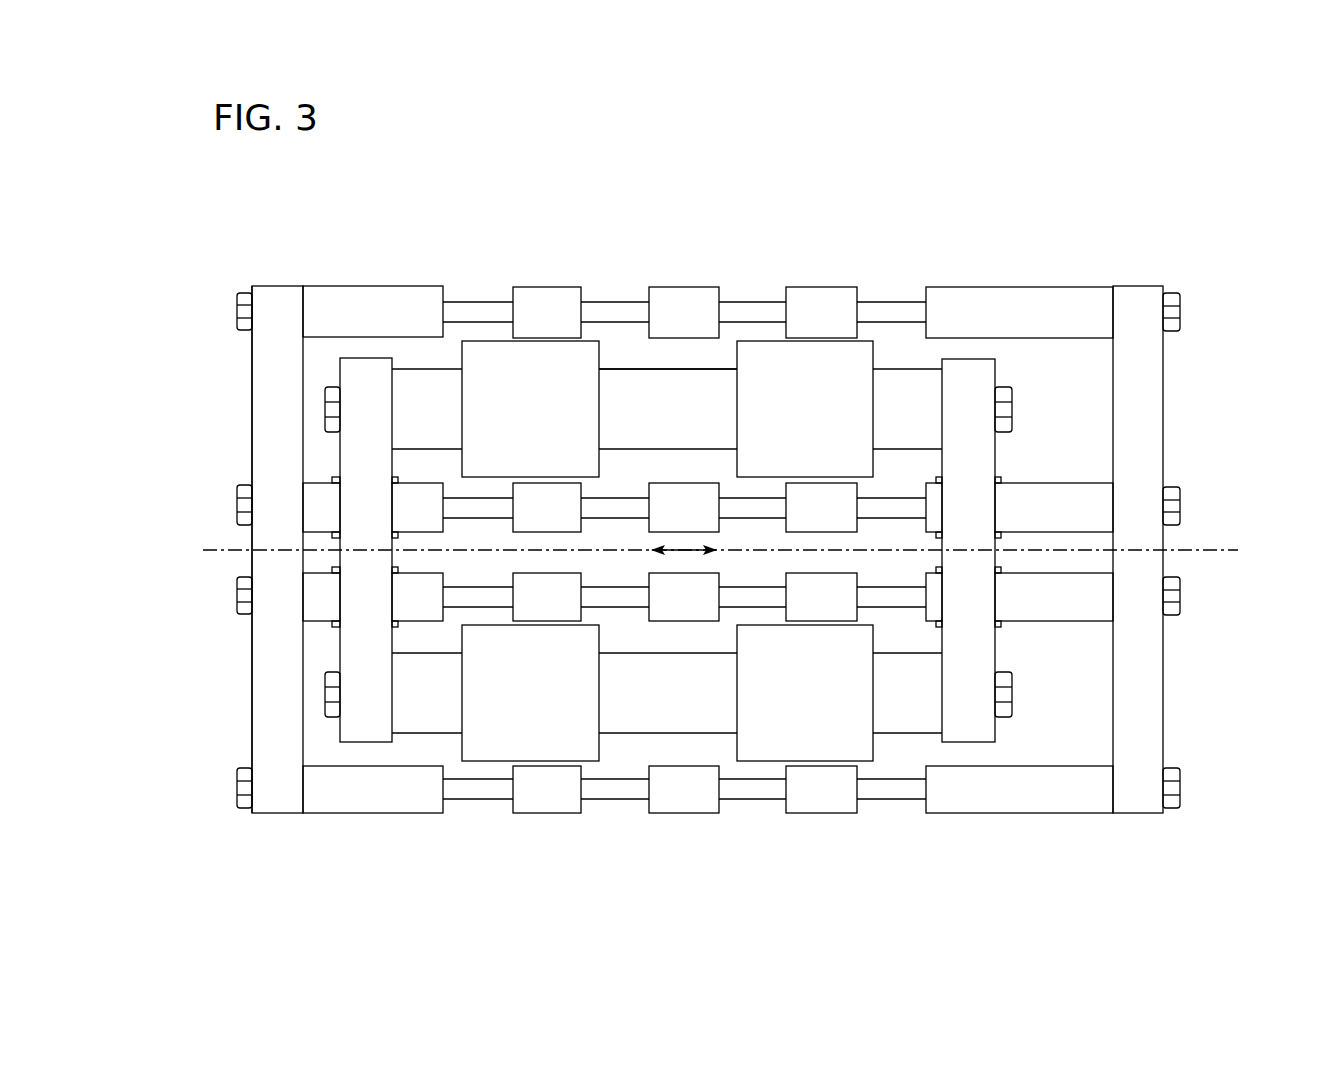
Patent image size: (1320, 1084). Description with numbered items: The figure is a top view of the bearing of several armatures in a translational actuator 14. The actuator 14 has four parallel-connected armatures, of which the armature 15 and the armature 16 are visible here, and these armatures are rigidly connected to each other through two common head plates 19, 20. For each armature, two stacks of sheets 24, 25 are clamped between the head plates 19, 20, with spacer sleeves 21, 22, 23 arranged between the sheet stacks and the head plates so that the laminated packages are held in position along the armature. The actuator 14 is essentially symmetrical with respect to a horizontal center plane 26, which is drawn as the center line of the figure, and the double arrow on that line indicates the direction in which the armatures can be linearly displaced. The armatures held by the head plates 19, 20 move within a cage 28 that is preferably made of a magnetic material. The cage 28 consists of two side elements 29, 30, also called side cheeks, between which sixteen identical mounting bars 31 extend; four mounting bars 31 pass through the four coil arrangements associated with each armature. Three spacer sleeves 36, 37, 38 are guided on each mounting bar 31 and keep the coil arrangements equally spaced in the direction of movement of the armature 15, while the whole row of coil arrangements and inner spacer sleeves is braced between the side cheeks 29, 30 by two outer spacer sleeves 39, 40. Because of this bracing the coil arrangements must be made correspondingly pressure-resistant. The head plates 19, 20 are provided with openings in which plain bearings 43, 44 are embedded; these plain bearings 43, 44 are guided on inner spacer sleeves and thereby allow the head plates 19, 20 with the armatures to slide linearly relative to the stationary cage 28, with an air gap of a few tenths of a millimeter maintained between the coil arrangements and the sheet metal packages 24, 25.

The translational actuator 14 is at (1087, 245).
The armature 15 is at (675, 368).
The armature 16 is at (633, 735).
The head plate 19 is at (357, 427).
The head plate 20 is at (975, 472).
The spacer sleeve 21 is at (435, 387).
The spacer sleeve 22 is at (605, 387).
The spacer sleeve 23 is at (910, 383).
The stack of sheets 24 is at (540, 363).
The stack of sheets 25 is at (810, 357).
The horizontal center plane 26 is at (743, 555).
The cage 28 is at (272, 283).
The side element 29 is at (269, 718).
The side element 30 is at (1142, 712).
The mounting bar 31 is at (765, 790).
The spacer sleeve 36 is at (532, 800).
The spacer sleeve 37 is at (698, 803).
The spacer sleeve 38 is at (845, 800).
The outer spacer sleeve 39 is at (405, 803).
The outer spacer sleeve 40 is at (1027, 803).
The plain bearing 43 is at (332, 478).
The plain bearing 44 is at (332, 568).